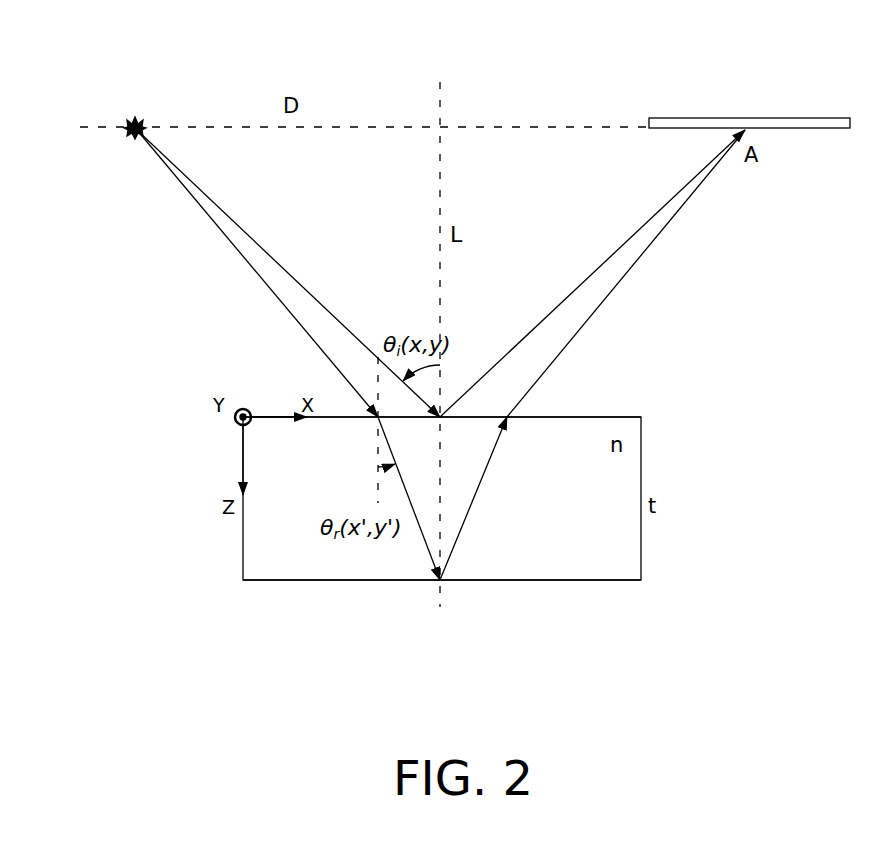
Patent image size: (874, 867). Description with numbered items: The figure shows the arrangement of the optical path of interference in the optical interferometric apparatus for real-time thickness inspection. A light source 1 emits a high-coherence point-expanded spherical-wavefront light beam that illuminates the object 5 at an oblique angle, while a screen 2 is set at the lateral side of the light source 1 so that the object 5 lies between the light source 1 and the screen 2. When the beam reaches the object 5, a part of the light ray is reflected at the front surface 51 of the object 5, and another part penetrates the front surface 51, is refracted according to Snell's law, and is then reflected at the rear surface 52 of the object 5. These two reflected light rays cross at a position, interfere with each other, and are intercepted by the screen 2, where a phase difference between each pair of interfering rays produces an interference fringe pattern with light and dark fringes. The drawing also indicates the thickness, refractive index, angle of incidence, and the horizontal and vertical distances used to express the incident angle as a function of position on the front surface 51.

The light source 1 is at (134, 118).
The screen 2 is at (802, 118).
The object 5 is at (641, 548).
The front surface 51 is at (593, 417).
The rear surface 52 is at (590, 580).